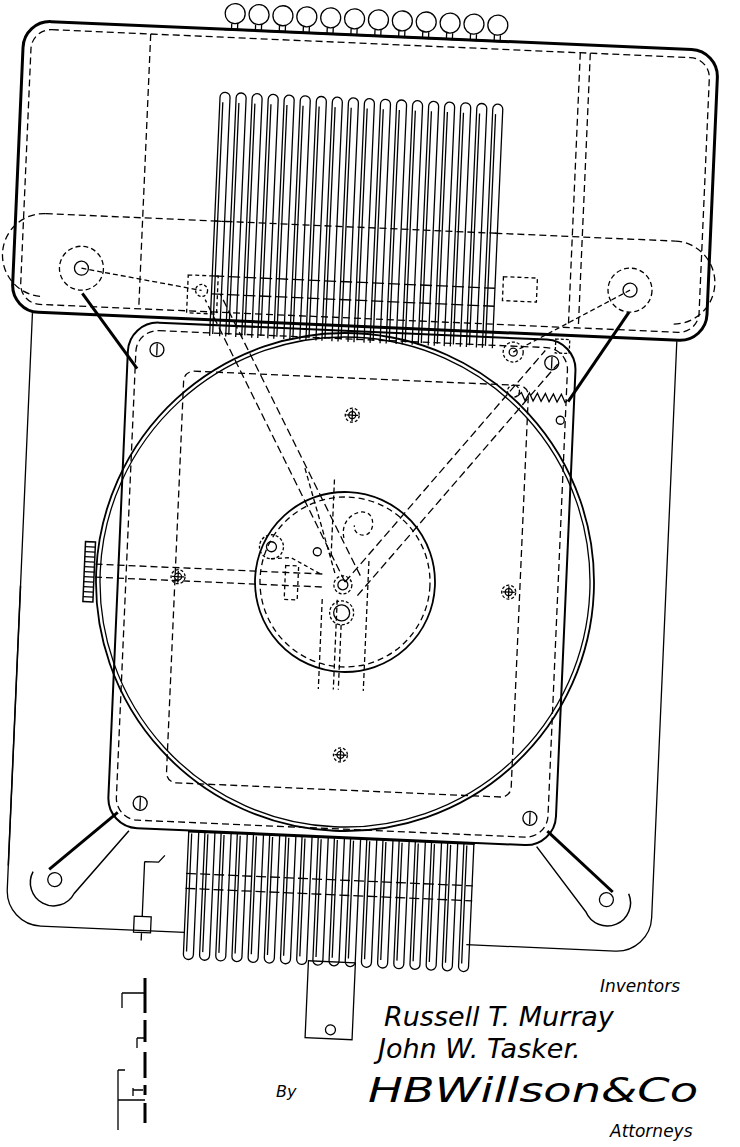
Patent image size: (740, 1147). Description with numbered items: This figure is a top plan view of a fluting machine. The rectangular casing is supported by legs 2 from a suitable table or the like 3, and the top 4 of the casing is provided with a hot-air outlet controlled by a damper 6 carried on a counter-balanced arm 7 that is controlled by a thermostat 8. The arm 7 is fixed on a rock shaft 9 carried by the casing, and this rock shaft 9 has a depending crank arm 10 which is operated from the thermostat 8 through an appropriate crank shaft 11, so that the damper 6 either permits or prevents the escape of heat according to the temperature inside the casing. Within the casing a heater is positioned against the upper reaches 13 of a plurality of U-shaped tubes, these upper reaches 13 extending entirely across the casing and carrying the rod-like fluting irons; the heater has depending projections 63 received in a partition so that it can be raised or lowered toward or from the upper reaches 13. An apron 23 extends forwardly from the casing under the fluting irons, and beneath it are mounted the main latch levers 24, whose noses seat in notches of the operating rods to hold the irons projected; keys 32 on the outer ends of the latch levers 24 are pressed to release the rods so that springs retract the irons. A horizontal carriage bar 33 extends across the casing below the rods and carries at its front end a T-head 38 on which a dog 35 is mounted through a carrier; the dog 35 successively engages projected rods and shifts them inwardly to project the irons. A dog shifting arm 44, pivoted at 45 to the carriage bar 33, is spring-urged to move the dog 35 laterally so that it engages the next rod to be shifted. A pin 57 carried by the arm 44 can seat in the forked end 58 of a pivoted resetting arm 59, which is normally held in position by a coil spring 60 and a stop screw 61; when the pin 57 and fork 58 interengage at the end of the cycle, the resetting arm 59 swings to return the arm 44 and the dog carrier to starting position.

The legs 2 is at (108, 333).
The table 3 is at (37, 517).
The top 4 is at (123, 745).
The damper 6 is at (410, 623).
The counter-balanced arm 7 is at (333, 733).
The thermostat 8 is at (287, 823).
The rock shaft 9 is at (208, 838).
The crank arm 10 is at (160, 833).
The crank shaft 11 is at (249, 190).
The upper reaches 13 is at (220, 972).
The apron 23 is at (362, 181).
The main latch levers 24 is at (277, 32).
The keys 32 is at (395, 35).
The carriage bar 33 is at (362, 705).
The dog 35 is at (200, 276).
The T-head 38 is at (522, 293).
The dog shifting arm 44 is at (255, 405).
The pivot 45 is at (357, 607).
The pin 57 is at (262, 548).
The forked end 58 is at (372, 528).
The resetting arm 59 is at (420, 450).
The coil spring 60 is at (530, 418).
The stop screw 61 is at (565, 418).
The depending projections 63 is at (125, 652).